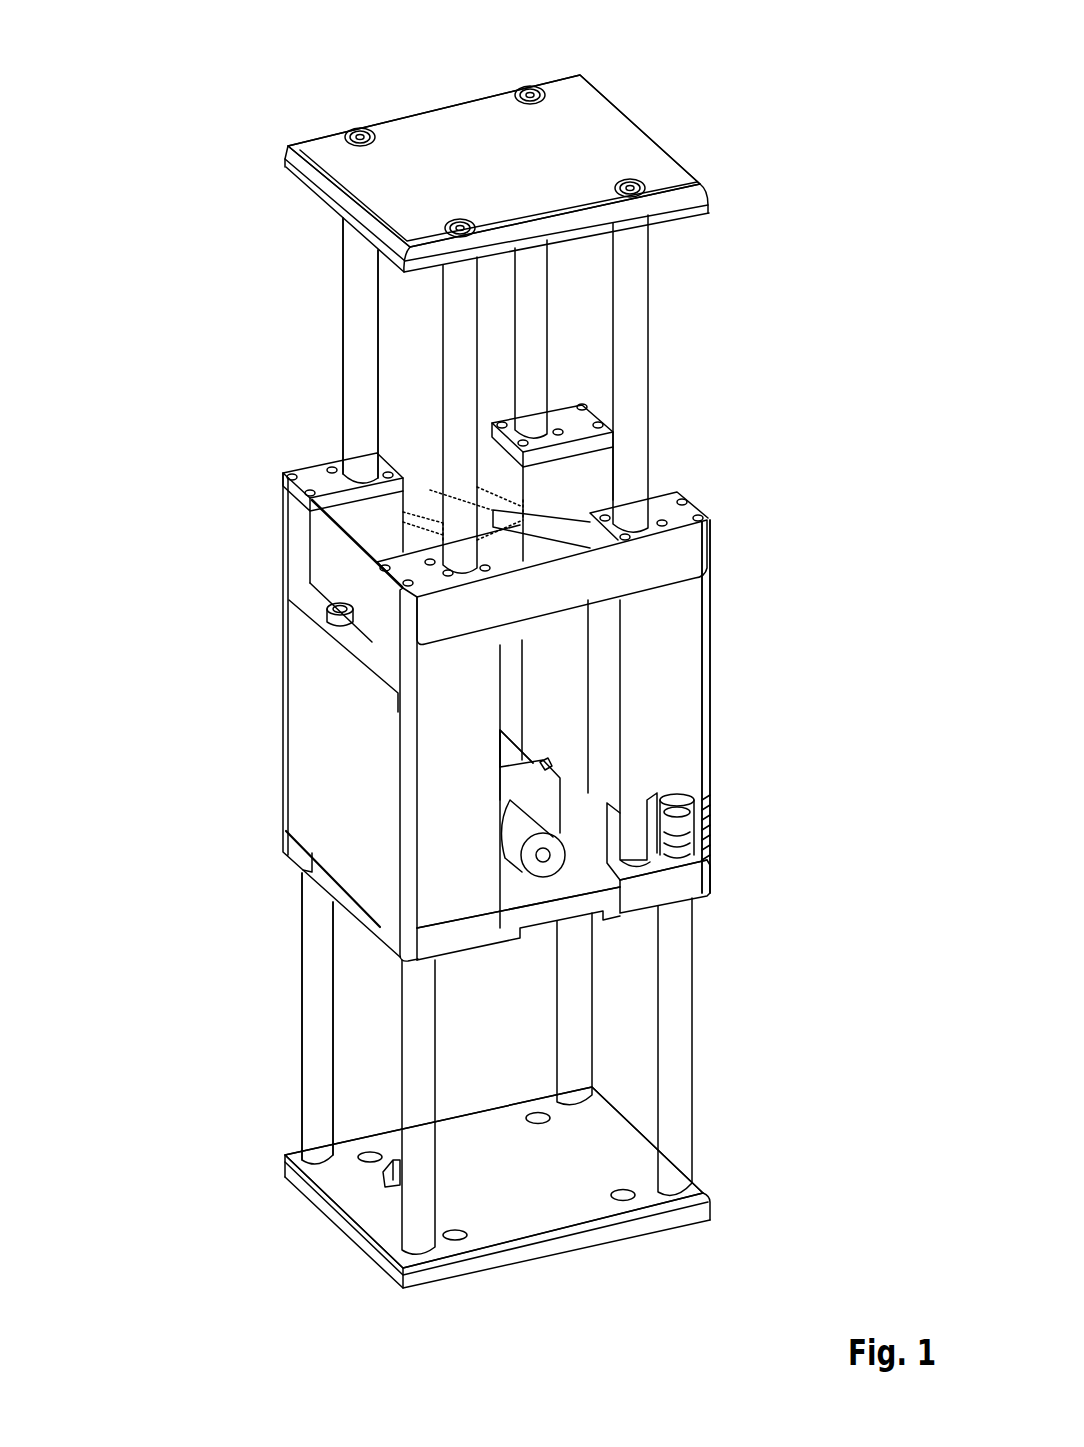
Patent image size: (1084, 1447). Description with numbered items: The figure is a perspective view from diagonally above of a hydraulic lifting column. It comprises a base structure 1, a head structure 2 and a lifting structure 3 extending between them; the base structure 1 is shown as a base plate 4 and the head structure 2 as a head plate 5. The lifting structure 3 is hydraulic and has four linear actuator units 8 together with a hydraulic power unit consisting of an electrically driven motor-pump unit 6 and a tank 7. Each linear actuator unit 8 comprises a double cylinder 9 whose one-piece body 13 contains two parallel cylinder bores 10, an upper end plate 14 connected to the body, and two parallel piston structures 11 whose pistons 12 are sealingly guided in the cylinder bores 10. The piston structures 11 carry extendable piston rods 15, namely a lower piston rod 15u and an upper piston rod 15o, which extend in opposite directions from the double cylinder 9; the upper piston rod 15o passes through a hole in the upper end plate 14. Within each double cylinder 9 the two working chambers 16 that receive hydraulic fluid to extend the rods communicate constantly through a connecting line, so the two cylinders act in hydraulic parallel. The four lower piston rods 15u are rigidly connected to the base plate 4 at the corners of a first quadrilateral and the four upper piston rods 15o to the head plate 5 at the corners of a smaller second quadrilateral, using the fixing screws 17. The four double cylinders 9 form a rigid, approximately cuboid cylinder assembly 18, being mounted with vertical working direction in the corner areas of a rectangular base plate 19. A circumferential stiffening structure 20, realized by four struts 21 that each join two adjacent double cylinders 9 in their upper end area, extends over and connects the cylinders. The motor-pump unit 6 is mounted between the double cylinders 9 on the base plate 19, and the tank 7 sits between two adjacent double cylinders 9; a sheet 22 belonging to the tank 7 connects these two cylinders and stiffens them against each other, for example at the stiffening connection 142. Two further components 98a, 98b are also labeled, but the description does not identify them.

The base structure 1 is at (287, 1228).
The head structure 2 is at (677, 125).
The lifting structure 3 is at (258, 612).
The base plate 4 is at (377, 1213).
The head plate 5 is at (457, 143).
The motor-pump unit 6 is at (517, 817).
The tank 7 is at (350, 630).
The linear actuator unit 8 is at (707, 493).
The double cylinder 9 is at (717, 670).
The cylinder bores 10 is at (683, 807).
The piston structures 11 is at (706, 928).
The pistons 12 is at (690, 823).
The one-piece body 13 is at (677, 618).
The upper end plate 14 is at (320, 478).
The stiffening connection 142 is at (425, 505).
The piston rods 15 is at (298, 337).
The upper piston rod 15o is at (357, 291).
The lower piston rod 15u is at (317, 1114).
The working chambers 16 is at (636, 824).
The fixing screws 17 is at (538, 87).
The cylinder assembly 18 is at (238, 712).
The base plate 19 is at (520, 900).
The stiffening structure 20 is at (667, 462).
The struts 21 is at (310, 538).
The sheet 22 is at (317, 803).
The coupling element 98a is at (508, 753).
The coupling element 98b is at (302, 782).